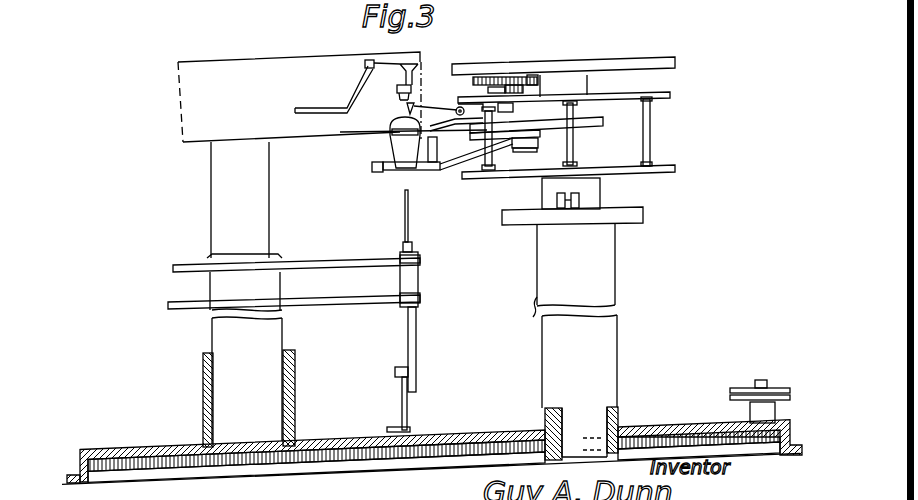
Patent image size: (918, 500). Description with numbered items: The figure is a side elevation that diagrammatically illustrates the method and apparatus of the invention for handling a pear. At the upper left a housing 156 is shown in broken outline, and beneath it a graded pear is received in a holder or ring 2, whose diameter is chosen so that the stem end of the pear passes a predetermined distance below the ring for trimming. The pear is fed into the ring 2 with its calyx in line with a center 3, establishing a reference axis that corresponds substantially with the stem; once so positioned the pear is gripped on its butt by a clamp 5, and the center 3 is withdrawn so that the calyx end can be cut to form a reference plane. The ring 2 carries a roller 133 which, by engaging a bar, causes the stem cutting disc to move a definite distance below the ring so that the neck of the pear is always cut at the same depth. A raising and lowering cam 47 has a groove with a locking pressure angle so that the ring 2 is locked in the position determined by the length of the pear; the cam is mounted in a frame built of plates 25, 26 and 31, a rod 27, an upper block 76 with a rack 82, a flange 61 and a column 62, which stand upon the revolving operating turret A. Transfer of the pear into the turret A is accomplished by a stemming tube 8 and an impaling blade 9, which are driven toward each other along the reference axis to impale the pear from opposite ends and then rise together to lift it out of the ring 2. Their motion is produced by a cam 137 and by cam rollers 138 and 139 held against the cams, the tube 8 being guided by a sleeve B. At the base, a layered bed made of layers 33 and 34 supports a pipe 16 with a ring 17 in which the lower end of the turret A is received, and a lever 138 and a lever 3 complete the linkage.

The housing 156 is at (312, 62).
The cam roller 138 is at (365, 62).
The impaling blade 9 is at (413, 92).
The center 3 is at (403, 108).
The clamp 5 is at (395, 135).
The holder or ring 2 is at (392, 170).
The roller 133 is at (373, 168).
The top plate block 76 is at (532, 75).
The rack 82 is at (477, 77).
The upper plate 25 is at (672, 95).
The plate 31 is at (598, 122).
The raising and lowering cam 47 is at (571, 127).
The rod 27 is at (652, 138).
The lower plate 26 is at (677, 168).
The flange 61 is at (633, 213).
The column 62 is at (607, 274).
The operating turret A is at (628, 334).
The stemming tube 8 is at (405, 222).
The cam roller 139 is at (402, 366).
The cam 137 is at (374, 436).
The base layer 34 is at (376, 458).
The base layer 33 is at (647, 440).
The sleeve B is at (200, 384).
The ring 17 is at (614, 406).
The pipe 16 is at (578, 420).